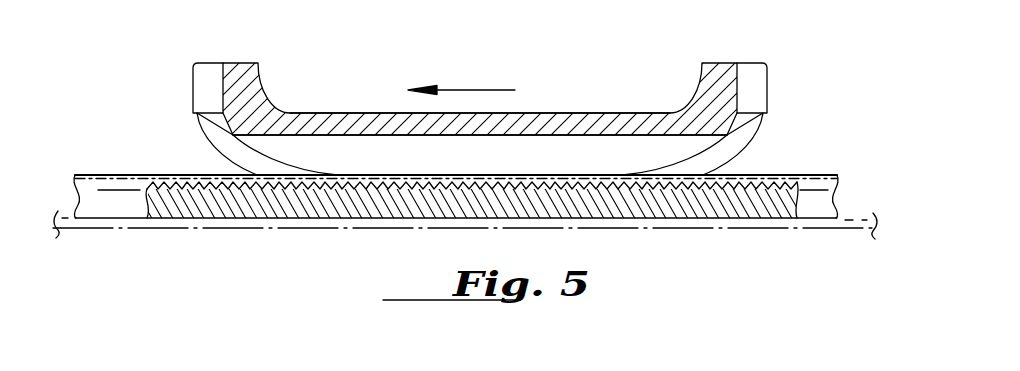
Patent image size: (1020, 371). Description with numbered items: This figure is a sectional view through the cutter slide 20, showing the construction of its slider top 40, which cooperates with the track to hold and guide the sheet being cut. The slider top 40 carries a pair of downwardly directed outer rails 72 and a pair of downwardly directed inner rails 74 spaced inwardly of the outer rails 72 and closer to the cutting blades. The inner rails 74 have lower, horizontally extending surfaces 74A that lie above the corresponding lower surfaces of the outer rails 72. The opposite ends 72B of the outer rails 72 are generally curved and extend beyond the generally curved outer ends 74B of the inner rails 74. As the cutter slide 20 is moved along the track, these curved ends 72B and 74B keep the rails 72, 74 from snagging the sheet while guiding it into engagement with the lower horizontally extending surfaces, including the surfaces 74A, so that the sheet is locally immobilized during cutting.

The cutter slide 20 is at (766, 65).
The slider top 40 is at (527, 122).
The outer rails 72 is at (234, 144).
The opposite ends of the outer rails 72B is at (203, 136).
The inner rails 74 is at (412, 157).
The lower horizontally extending surfaces of the inner rails 74A is at (565, 188).
The outer ends of the inner rails 74B is at (281, 160).